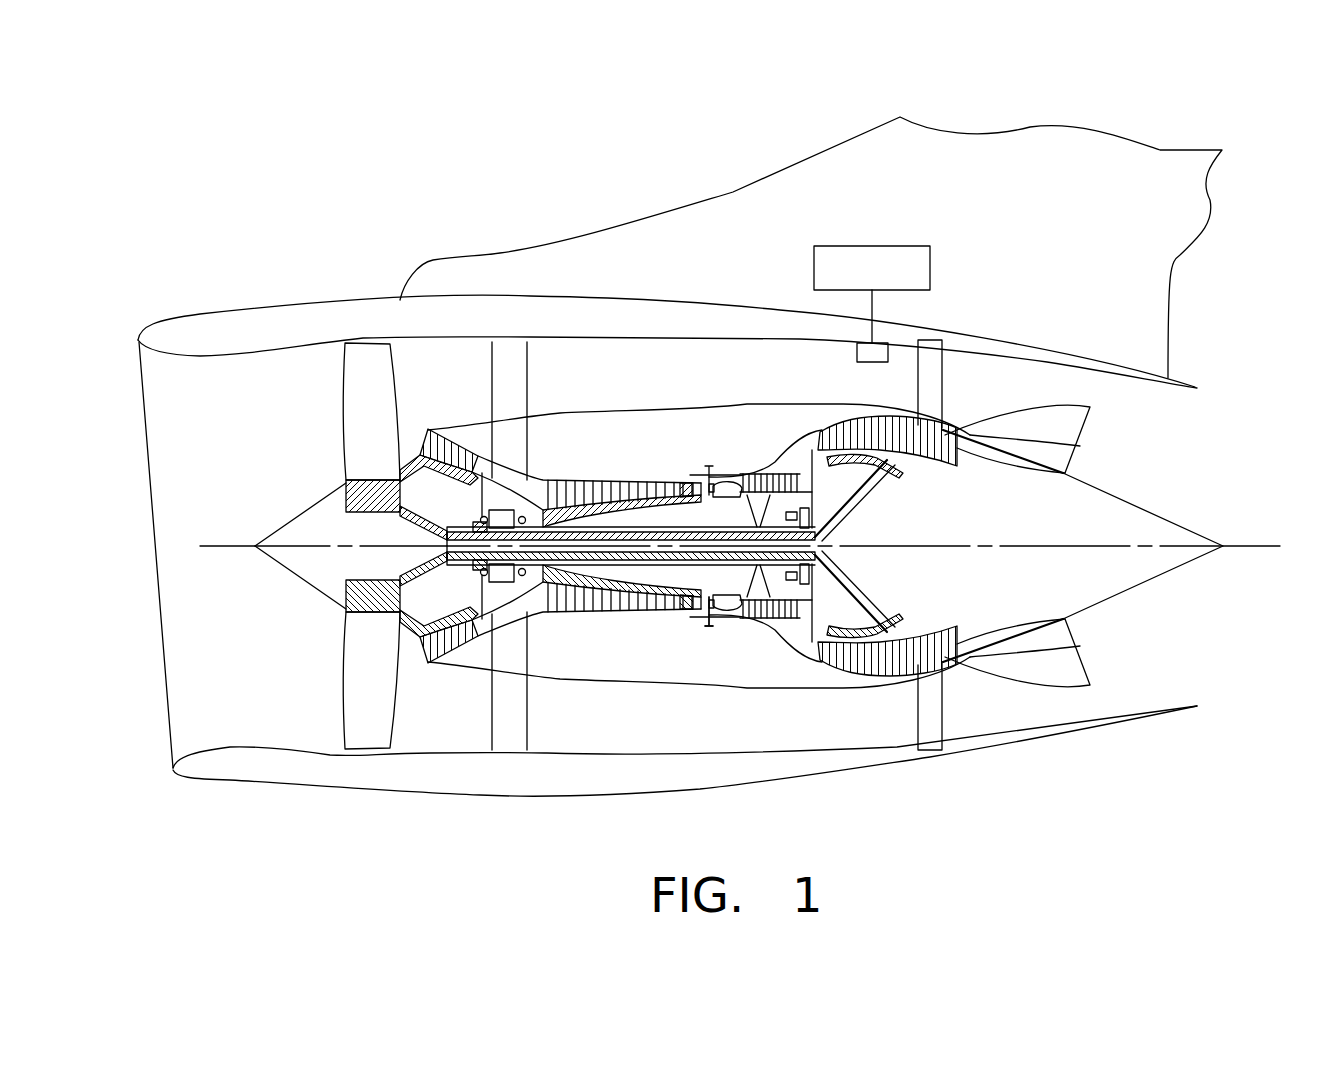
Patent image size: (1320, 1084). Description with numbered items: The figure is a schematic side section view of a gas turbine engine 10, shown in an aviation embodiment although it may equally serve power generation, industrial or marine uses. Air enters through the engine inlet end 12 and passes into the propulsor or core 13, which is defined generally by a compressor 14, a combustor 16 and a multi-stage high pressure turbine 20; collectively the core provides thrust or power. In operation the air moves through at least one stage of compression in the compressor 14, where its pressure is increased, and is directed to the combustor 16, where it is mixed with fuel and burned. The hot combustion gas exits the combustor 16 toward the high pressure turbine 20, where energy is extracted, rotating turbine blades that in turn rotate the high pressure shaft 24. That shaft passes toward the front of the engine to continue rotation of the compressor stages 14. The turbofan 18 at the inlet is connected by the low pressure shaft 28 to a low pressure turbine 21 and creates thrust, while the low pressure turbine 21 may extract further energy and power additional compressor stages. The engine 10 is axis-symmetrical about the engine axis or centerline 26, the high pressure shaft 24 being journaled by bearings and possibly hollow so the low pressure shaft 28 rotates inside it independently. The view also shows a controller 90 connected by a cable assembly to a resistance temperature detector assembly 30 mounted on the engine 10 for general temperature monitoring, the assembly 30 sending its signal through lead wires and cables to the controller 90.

The gas turbine engine 10 is at (962, 273).
The engine inlet end 12 is at (158, 380).
The propulsor or core 13 is at (665, 405).
The compressor 14 is at (573, 468).
The combustor 16 is at (728, 460).
The turbofan 18 is at (312, 405).
The multi-stage high pressure turbine 20 is at (778, 455).
The low pressure turbine 21 is at (900, 490).
The high pressure shaft 24 is at (700, 590).
The engine axis / centerline 26 is at (1280, 546).
The low pressure shaft 28 is at (622, 600).
The resistance temperature detector (RTD) assembly 30 is at (857, 352).
The controller 90 is at (915, 222).